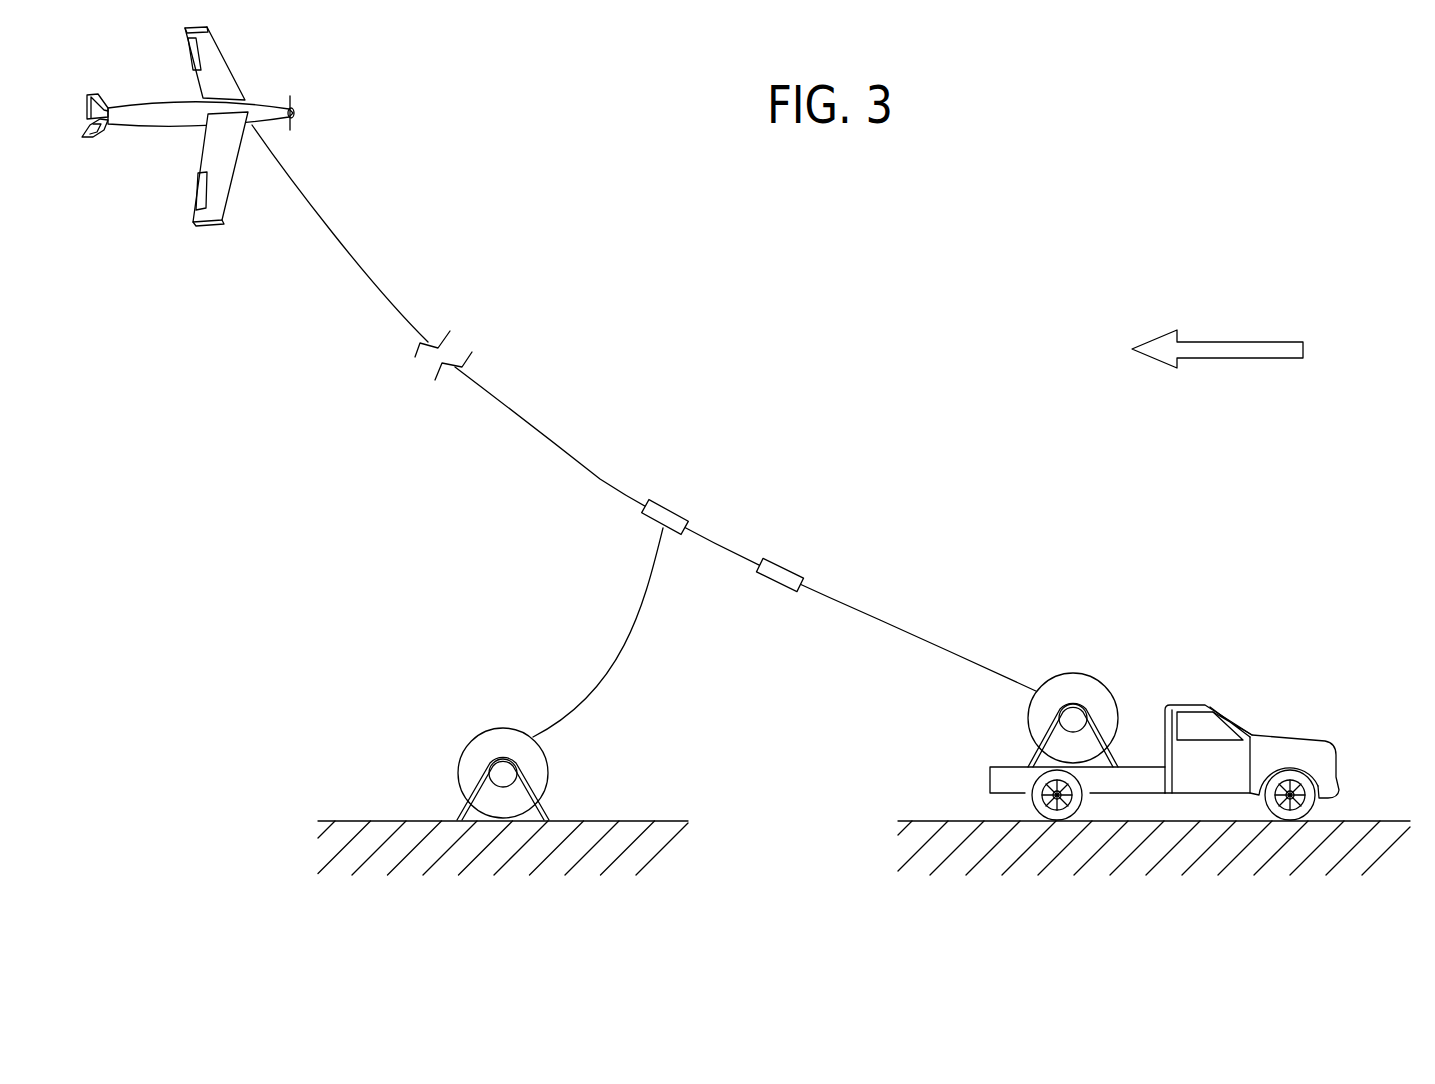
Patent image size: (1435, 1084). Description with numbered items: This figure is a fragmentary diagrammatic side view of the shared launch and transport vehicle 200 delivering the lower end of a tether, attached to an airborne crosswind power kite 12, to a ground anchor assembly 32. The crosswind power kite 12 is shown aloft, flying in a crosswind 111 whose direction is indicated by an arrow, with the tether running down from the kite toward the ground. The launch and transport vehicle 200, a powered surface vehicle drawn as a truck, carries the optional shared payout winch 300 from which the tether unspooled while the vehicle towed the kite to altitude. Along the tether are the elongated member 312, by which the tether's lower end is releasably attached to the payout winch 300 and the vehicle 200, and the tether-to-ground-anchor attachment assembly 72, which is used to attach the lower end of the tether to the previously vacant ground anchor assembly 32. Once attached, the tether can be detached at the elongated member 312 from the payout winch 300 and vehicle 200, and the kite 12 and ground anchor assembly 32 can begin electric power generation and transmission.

The crosswind power kite 12 is at (189, 230).
The tether-to-ground-anchor attachment assembly 72 is at (666, 497).
The elongated member 312 is at (780, 552).
The ground anchor assembly 32 is at (483, 720).
The payout winch 300 is at (1092, 661).
The launch and transport vehicle 200 is at (1303, 723).
The crosswind 111 is at (1243, 342).